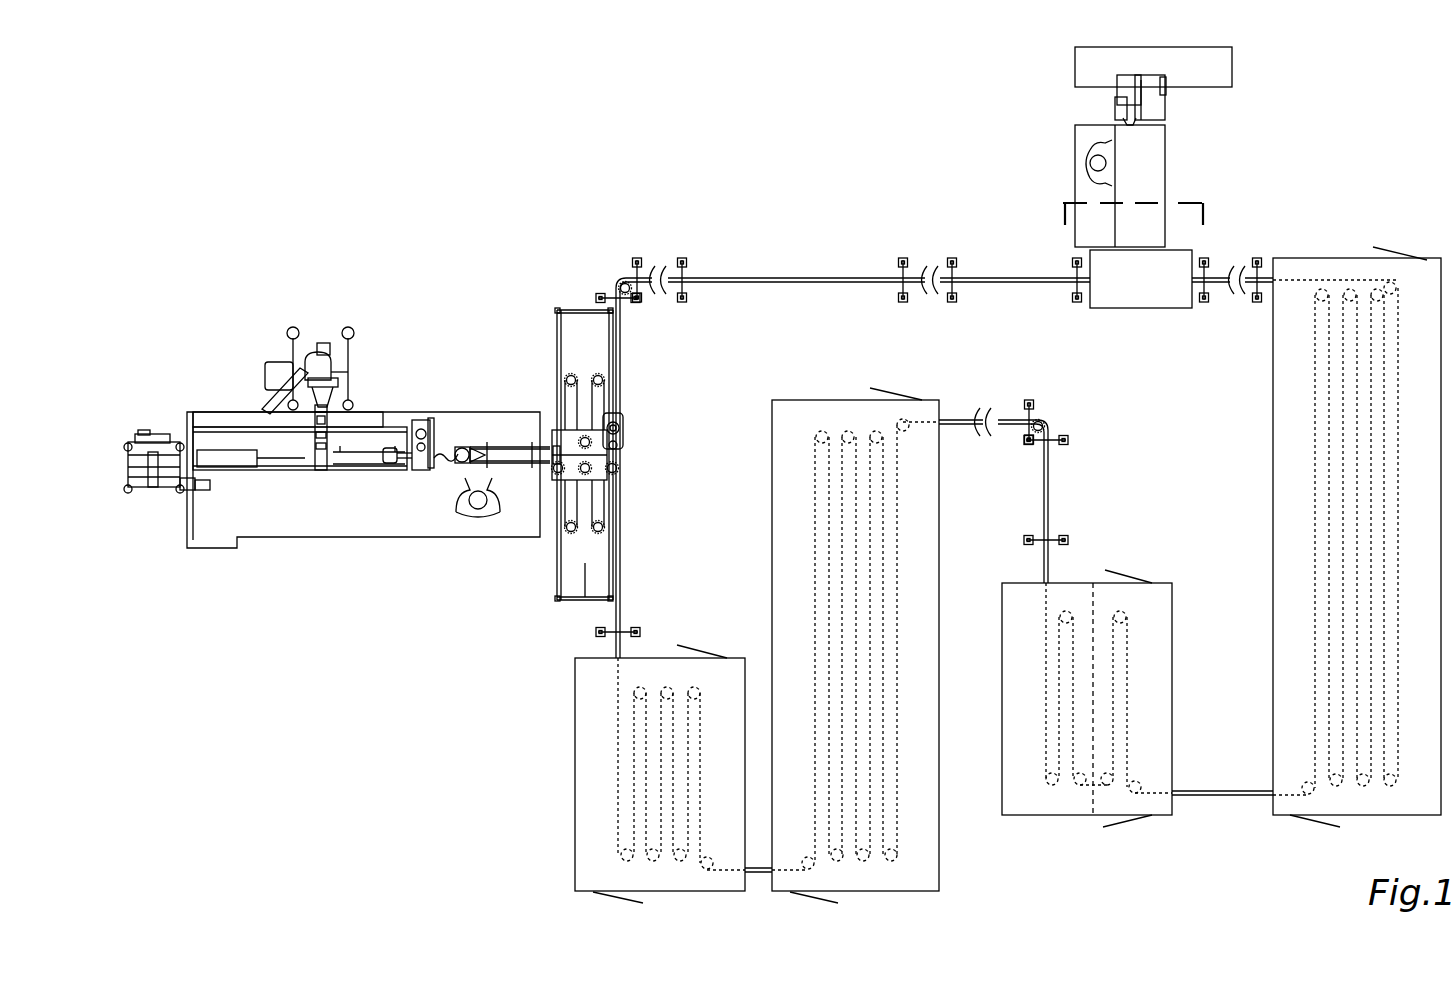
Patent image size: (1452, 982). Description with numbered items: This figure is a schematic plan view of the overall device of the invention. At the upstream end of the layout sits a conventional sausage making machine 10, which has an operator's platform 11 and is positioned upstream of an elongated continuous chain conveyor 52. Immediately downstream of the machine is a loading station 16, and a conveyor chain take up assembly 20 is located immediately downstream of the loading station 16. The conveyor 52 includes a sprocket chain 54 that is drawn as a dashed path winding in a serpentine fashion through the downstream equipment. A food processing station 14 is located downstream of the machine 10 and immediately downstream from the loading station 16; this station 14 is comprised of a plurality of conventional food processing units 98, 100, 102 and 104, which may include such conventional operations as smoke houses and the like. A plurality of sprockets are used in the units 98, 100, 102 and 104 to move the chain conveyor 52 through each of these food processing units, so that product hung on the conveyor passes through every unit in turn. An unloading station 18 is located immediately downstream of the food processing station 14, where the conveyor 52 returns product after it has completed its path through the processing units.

The sausage making machine 10 is at (318, 560).
The operator's platform 11 is at (400, 520).
The food processing station 14 is at (975, 575).
The loading station 16 is at (552, 400).
The unloading station 18 is at (1120, 307).
The conveyor chain take up assembly 20 is at (557, 310).
The chain conveyor 52 is at (822, 288).
The sprocket chain 54 is at (615, 745).
The food processing unit 98 is at (590, 708).
The food processing unit 100 is at (939, 492).
The food processing unit 102 is at (1172, 636).
The food processing unit 104 is at (1273, 393).